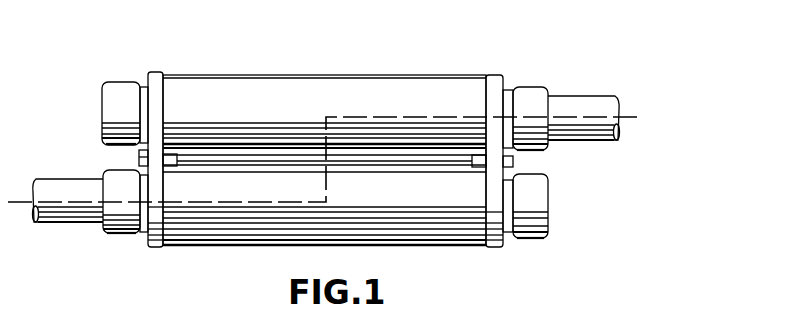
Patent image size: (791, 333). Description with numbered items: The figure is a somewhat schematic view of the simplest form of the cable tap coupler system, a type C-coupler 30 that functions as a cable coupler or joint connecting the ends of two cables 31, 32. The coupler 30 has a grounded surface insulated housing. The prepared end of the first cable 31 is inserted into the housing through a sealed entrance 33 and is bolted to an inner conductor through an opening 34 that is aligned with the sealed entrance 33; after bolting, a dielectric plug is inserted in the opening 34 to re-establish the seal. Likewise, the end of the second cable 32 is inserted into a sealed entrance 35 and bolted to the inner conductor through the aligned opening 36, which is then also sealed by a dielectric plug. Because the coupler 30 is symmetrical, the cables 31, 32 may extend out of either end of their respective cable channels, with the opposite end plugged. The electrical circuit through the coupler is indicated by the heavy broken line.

The type C-coupler 30 is at (367, 73).
The cable 31 is at (52, 224).
The cable 32 is at (590, 95).
The sealed entrance 33 is at (128, 235).
The opening 34 is at (548, 207).
The sealed entrance 35 is at (529, 87).
The opening 36 is at (128, 82).